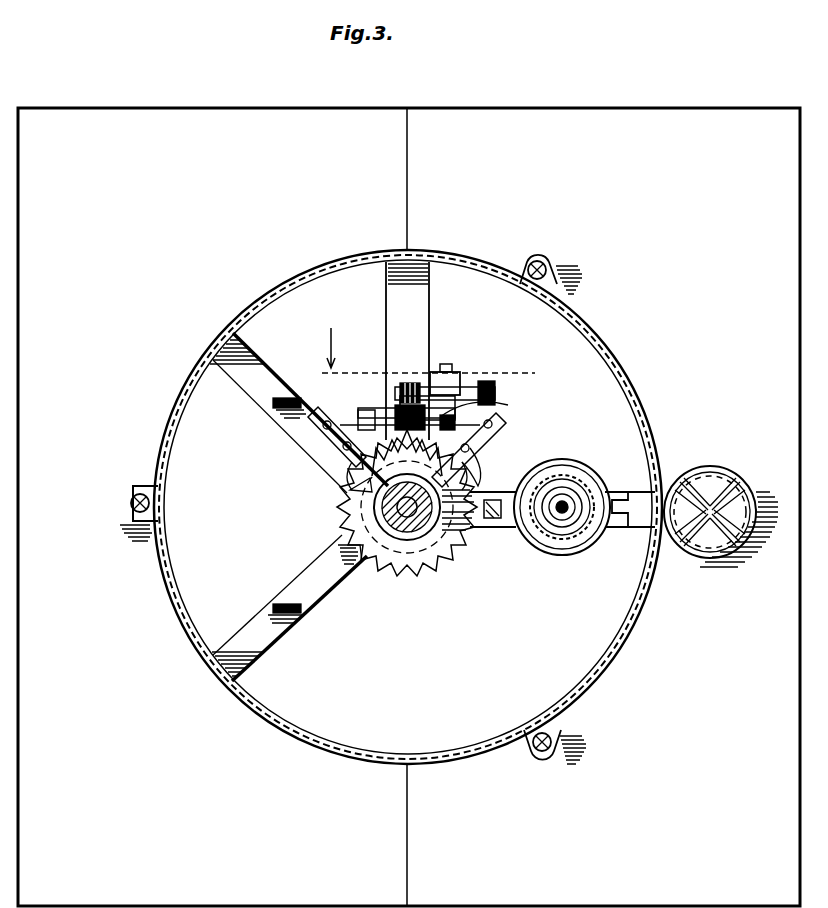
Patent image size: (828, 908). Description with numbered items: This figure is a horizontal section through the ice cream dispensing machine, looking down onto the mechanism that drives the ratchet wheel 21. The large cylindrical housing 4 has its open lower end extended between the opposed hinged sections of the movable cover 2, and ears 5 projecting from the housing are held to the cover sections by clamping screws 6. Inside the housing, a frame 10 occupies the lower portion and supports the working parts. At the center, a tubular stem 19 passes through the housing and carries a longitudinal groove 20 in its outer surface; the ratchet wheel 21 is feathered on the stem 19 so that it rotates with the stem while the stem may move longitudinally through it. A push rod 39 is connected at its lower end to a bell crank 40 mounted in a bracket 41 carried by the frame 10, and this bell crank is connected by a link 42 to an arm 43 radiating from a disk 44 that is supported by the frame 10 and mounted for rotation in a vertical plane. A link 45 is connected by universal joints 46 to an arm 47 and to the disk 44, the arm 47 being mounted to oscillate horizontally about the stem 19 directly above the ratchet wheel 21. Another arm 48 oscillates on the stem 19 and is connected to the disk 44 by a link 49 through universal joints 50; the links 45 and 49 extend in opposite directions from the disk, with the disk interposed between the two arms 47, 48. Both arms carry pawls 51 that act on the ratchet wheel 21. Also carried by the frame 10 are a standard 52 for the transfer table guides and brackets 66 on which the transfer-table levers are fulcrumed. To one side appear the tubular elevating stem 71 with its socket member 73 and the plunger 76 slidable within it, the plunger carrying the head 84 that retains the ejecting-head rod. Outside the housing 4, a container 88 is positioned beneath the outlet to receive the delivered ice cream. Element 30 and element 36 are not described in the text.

The movable cover 2 is at (409, 507).
The housing 4 is at (620, 378).
The ears 5 is at (135, 524).
The clamping screws 6 is at (140, 494).
The frame 10 is at (392, 292).
The tubular stem 19 is at (393, 532).
The longitudinal groove 20 is at (407, 530).
The ratchet wheel 21 is at (438, 562).
The pawl 30 is at (345, 532).
The nut 36 is at (486, 380).
The push rod 39 is at (497, 390).
The bell crank 40 is at (455, 390).
The bracket 41 is at (447, 370).
The link 42 is at (447, 364).
The arm 43 is at (407, 453).
The disk 44 is at (392, 408).
The link 45 is at (490, 404).
The universal joints 46 is at (500, 420).
The arm 47 is at (497, 428).
The arm 48 is at (370, 492).
The link 49 is at (352, 412).
The universal joints 50 is at (333, 412).
The pawls 51 is at (350, 470).
The standard 52 is at (492, 520).
The brackets 66 is at (282, 408).
The tubular elevating stem 71 is at (554, 520).
The socket member 73 is at (570, 525).
The plunger 76 is at (588, 528).
The head 84 is at (575, 490).
The container 88 is at (724, 470).